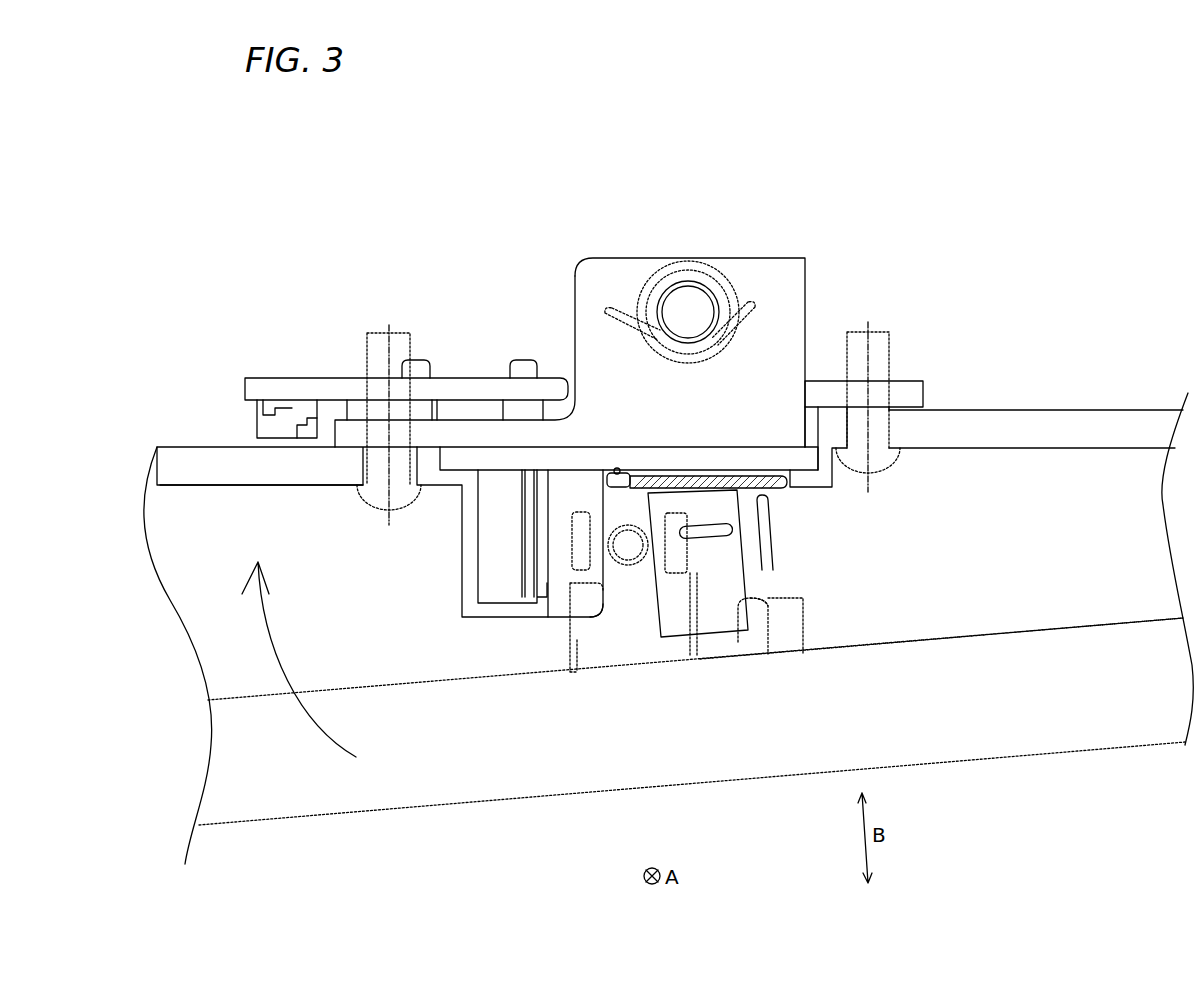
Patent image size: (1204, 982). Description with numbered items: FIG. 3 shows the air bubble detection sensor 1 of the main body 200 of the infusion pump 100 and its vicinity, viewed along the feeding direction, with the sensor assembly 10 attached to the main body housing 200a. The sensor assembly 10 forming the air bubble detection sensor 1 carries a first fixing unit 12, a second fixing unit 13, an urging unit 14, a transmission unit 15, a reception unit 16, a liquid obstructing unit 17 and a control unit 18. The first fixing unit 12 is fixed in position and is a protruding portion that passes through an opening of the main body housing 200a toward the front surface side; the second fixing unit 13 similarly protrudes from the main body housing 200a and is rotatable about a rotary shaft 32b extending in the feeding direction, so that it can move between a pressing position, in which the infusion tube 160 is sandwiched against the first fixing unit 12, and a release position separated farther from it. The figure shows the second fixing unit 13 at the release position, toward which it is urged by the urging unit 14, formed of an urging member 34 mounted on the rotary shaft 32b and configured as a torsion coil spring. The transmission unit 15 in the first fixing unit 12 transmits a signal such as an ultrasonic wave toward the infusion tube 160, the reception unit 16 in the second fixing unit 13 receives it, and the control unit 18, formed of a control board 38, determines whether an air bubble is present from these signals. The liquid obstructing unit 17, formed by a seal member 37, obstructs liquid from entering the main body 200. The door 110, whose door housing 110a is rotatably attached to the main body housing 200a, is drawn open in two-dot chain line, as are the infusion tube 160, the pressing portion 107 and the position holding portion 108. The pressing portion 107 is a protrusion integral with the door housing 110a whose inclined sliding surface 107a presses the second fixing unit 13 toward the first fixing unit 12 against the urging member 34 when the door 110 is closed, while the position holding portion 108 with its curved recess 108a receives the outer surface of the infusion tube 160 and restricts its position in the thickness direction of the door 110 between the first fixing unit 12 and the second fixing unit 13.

The air bubble detection sensor 1 is at (858, 536).
The sensor assembly 10 is at (866, 244).
The first fixing unit 12 is at (557, 565).
The second fixing unit 13 is at (720, 570).
The urging unit 14 is at (688, 312).
The transmission unit 15 is at (582, 530).
The reception unit 16 is at (690, 515).
The liquid obstructing unit 17 is at (697, 478).
The control unit 18 is at (287, 419).
The rotary shaft 32b is at (680, 305).
The urging member 34 is at (728, 290).
The seal member 37 is at (678, 457).
The control board 38 is at (312, 383).
The infusion pump 100 is at (1106, 500).
The pressing portion 107 is at (823, 628).
The sliding surface 107a is at (767, 603).
The position holding portion 108 is at (569, 664).
The curved recess 108a is at (628, 598).
The door 110 is at (1055, 627).
The door housing 110a is at (940, 657).
The infusion tube 160 is at (630, 580).
The main body 200 is at (1040, 457).
The main body housing 200a is at (303, 474).